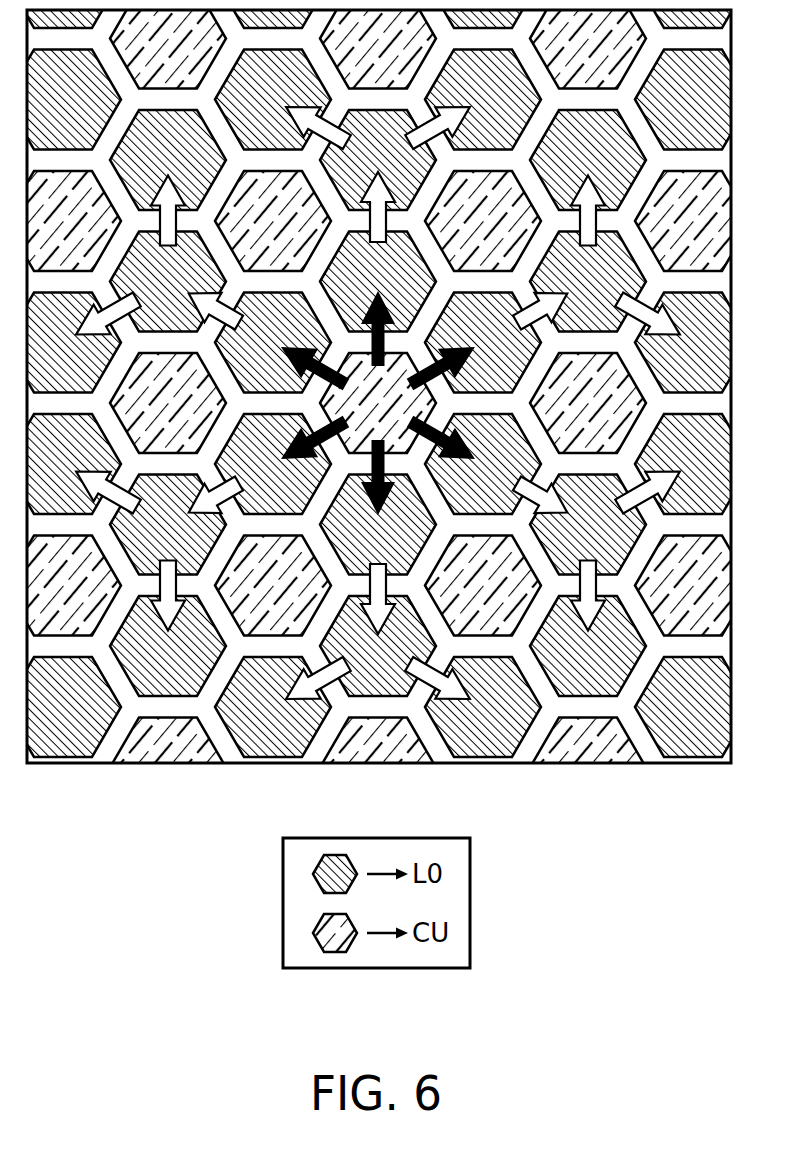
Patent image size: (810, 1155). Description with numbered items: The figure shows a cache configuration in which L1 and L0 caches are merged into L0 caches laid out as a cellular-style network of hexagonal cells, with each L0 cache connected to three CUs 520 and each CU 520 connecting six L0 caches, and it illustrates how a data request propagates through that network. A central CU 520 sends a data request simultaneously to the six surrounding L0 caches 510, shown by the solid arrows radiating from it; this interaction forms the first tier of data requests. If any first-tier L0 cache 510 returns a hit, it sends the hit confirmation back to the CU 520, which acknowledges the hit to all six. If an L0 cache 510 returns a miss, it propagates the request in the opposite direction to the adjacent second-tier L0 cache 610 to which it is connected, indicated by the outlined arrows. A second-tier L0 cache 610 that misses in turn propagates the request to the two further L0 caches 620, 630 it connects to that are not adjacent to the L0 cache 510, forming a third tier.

The CU 520 is at (378, 409).
The L0 cache 510 is at (378, 403).
The L0 cache 610 is at (378, 403).
The L0 cache 620 is at (378, 404).
The L0 cache 630 is at (378, 404).